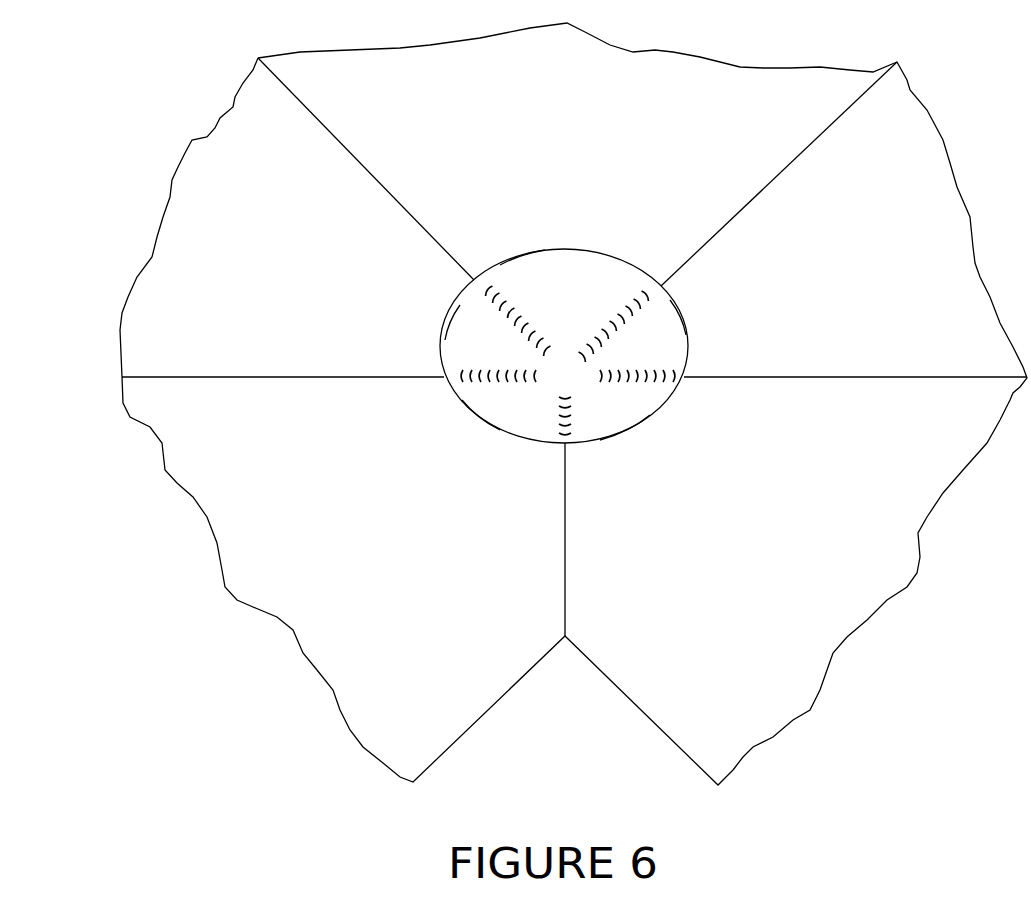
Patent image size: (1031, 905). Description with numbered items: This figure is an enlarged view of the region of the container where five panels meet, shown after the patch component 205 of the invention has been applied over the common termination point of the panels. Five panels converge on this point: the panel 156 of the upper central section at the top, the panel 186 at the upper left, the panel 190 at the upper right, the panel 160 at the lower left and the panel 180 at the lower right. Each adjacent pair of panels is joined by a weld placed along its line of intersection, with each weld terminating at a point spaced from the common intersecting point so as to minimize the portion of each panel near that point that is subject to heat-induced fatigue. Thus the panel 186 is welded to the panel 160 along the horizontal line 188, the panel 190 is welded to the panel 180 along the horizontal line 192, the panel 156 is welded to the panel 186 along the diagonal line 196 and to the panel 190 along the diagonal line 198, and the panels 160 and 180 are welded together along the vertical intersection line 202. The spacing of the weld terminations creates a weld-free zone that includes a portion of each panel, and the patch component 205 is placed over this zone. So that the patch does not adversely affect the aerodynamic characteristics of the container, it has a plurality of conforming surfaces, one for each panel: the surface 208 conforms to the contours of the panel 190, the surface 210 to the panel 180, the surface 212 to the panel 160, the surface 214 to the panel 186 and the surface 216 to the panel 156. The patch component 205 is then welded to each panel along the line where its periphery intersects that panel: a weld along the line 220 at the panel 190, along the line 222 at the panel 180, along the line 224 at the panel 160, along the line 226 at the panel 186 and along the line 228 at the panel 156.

The panel 156 is at (596, 110).
The panel 160 is at (315, 555).
The panel 180 is at (835, 535).
The panel 186 is at (287, 225).
The panel 190 is at (925, 277).
The line 188 is at (258, 376).
The line 192 is at (765, 380).
The line 196 is at (338, 138).
The line 198 is at (806, 143).
The intersection line 202 is at (563, 594).
The patch component 205 is at (610, 283).
The surface 208 is at (672, 358).
The surface 210 is at (641, 418).
The surface 212 is at (540, 418).
The surface 214 is at (516, 355).
The surface 216 is at (590, 310).
The line 220 is at (687, 316).
The line 222 is at (618, 437).
The line 224 is at (479, 419).
The line 226 is at (450, 325).
The line 228 is at (520, 258).